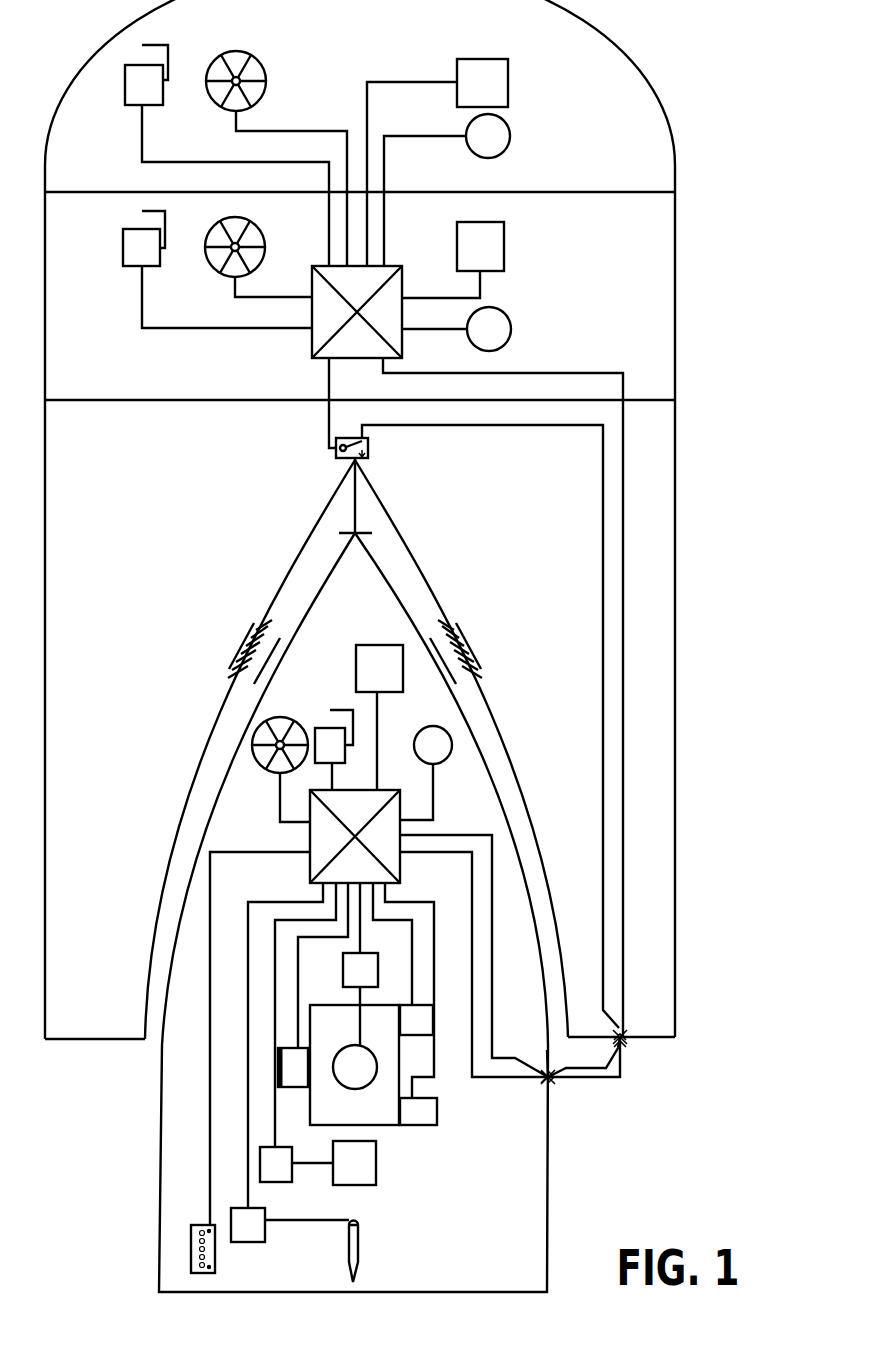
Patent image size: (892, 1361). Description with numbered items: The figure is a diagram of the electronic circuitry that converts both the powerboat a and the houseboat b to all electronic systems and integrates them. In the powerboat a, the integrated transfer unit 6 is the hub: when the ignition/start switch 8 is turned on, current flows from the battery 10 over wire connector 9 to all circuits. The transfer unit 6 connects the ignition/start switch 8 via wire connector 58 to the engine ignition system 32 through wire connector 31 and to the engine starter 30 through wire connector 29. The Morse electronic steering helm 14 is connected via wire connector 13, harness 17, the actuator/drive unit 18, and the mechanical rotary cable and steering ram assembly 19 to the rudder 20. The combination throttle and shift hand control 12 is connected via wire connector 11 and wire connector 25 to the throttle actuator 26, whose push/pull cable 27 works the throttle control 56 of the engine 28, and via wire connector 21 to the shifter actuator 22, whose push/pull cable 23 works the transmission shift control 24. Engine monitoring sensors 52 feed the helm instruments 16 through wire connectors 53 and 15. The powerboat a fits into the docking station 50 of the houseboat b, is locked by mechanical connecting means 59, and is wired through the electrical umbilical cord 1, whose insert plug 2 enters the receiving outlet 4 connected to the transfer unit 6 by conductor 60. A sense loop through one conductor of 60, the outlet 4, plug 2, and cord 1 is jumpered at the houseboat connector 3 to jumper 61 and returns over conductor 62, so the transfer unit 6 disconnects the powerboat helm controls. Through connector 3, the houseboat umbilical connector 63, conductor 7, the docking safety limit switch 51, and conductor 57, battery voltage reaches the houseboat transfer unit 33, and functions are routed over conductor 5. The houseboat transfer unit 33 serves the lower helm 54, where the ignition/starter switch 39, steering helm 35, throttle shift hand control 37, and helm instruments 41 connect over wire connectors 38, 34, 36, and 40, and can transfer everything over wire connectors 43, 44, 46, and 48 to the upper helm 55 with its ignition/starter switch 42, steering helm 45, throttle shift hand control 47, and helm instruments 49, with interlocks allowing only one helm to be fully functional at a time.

The electrical umbilical cord 1 is at (584, 1075).
The male lead insert plug 2 is at (559, 1060).
The umbilical cable houseboat connector 3 is at (630, 1049).
The female receiving outlet 4 is at (541, 1090).
The conductor 5 is at (513, 697).
The powerboat integrated transfer unit 6 is at (348, 827).
The conductor 7 is at (490, 726).
The ignition/start switch 8 is at (426, 758).
The wire connector 9 is at (248, 1038).
The battery 10 is at (187, 1249).
The wire connector 11 is at (349, 776).
The combination throttle and shift hand control 12 is at (320, 758).
The wire connector 13 is at (276, 797).
The electronic steering helm 14 is at (280, 730).
The wire connector 15 is at (393, 741).
The helm instruments 16 is at (368, 682).
The steering helm to power unit harness 17 is at (271, 1045).
The actuator/drive unit 18 is at (237, 1238).
The mechanical rotary cable and steering ram assembly 19 is at (307, 1205).
The rudder 20 is at (371, 1252).
The wire connector 21 is at (291, 1015).
The shifter actuator 22 is at (265, 1178).
The mechanical push/pull cable 23 is at (312, 1147).
The transmission shift control 24 is at (344, 1178).
The wire connector 25 is at (379, 918).
The throttle actuator 26 is at (349, 983).
The mechanical push/pull cable 27 is at (378, 1016).
The engine 28 is at (354, 1065).
The wire connector 29 is at (426, 990).
The engine starter 30 is at (407, 1123).
The wire connector 31 is at (393, 944).
The engine ignition system 32 is at (407, 1032).
The houseboat transfer unit 33 is at (344, 293).
The wire connector 34 is at (273, 285).
The electronic steering helm 35 is at (235, 235).
The wire connector 36 is at (227, 297).
The throttle shift hand control 37 is at (131, 261).
The wire connector 38 is at (434, 345).
The ignition/starter switch 39 is at (478, 342).
The wire connector 40 is at (441, 283).
The helm instruments 41 is at (469, 260).
The ignition/starter switch 42 is at (477, 149).
The wire connector 43 is at (425, 201).
The wire connector 44 is at (291, 187).
The electronic steering helm 45 is at (236, 67).
The wire connector 46 is at (235, 185).
The throttle shift hand control 47 is at (133, 98).
The wire connector 48 is at (412, 161).
The helm instruments 49 is at (470, 98).
The docking station 50 is at (356, 748).
The docking safety limit switch 51 is at (371, 451).
The engine monitoring sensors 52 is at (283, 1080).
The wire connector 53 is at (323, 965).
The lower helm 54 is at (360, 329).
The upper helm 55 is at (360, 96).
The engine throttle control 56 is at (344, 1080).
The conductor 57 is at (313, 403).
The wire connector 58 is at (434, 790).
The mechanical connecting means 59 is at (248, 642).
The conductor 60 is at (474, 964).
The jumper 61 is at (584, 1057).
The conductor 62 is at (474, 956).
The houseboat umbilical connector 63 is at (621, 1023).
The powerboat a is at (547, 1190).
The houseboat b is at (673, 725).